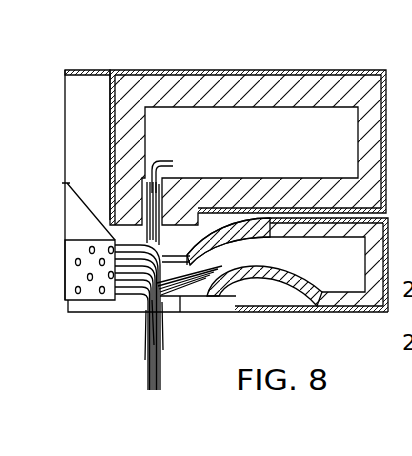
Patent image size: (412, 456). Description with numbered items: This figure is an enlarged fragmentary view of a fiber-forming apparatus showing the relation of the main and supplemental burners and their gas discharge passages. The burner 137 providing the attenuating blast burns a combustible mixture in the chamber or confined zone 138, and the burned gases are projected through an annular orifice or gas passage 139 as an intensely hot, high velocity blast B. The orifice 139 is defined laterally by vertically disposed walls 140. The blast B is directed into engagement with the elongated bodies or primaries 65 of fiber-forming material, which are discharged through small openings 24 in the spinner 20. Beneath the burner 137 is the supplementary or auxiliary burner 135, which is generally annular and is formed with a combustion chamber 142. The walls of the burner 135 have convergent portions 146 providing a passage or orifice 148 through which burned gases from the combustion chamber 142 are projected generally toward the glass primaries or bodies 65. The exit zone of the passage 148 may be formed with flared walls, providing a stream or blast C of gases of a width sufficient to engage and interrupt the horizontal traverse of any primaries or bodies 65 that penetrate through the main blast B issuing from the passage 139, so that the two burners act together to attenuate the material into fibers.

The burner 137 is at (328, 63).
The chamber or confined zone 138 is at (324, 143).
The orifice or gas passage 139 is at (155, 204).
The vertically disposed walls 140 is at (180, 172).
The combustion chamber 142 is at (360, 265).
The convergent portions 146 is at (249, 250).
The passage or orifice 148 is at (232, 264).
The supplementary or auxiliary burner 135 is at (374, 311).
The spinner 20 is at (72, 203).
The small openings 24 is at (76, 290).
The elongated bodies or primaries 65 is at (137, 285).
The blast B is at (113, 239).
The stream or blast C is at (188, 312).